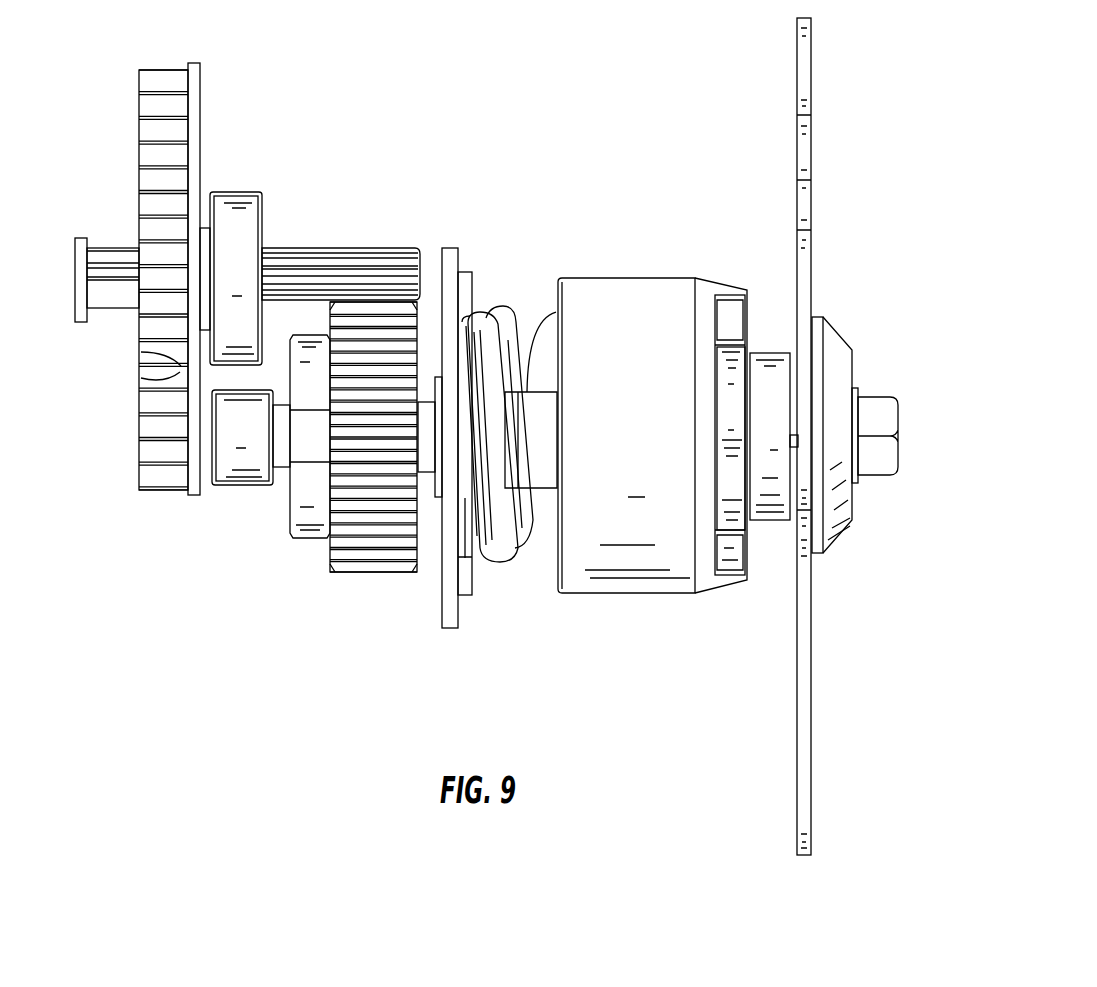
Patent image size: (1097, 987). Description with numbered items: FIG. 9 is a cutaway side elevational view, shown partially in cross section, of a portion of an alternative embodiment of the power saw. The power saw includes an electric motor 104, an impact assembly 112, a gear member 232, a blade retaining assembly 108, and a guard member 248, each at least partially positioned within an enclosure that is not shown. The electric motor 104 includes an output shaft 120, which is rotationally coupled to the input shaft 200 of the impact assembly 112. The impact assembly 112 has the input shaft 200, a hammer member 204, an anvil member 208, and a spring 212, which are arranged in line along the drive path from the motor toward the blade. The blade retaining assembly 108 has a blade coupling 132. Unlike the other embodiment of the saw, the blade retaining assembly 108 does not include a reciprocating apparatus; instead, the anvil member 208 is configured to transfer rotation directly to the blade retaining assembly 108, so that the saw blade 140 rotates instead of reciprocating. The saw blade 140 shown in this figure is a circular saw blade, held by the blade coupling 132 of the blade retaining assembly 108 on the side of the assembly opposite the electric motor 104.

The electric motor 104 is at (86, 207).
The output shaft 120 is at (302, 267).
The input shaft 200 is at (276, 478).
The gear member 232 is at (372, 540).
The guard member 248 is at (450, 270).
The spring 212 is at (503, 330).
The impact assembly 112 is at (576, 624).
The hammer member 204 is at (635, 323).
The anvil member 208 is at (732, 495).
The saw blade 140 is at (797, 694).
The blade retaining assembly 108 is at (847, 552).
The blade coupling 132 is at (840, 410).